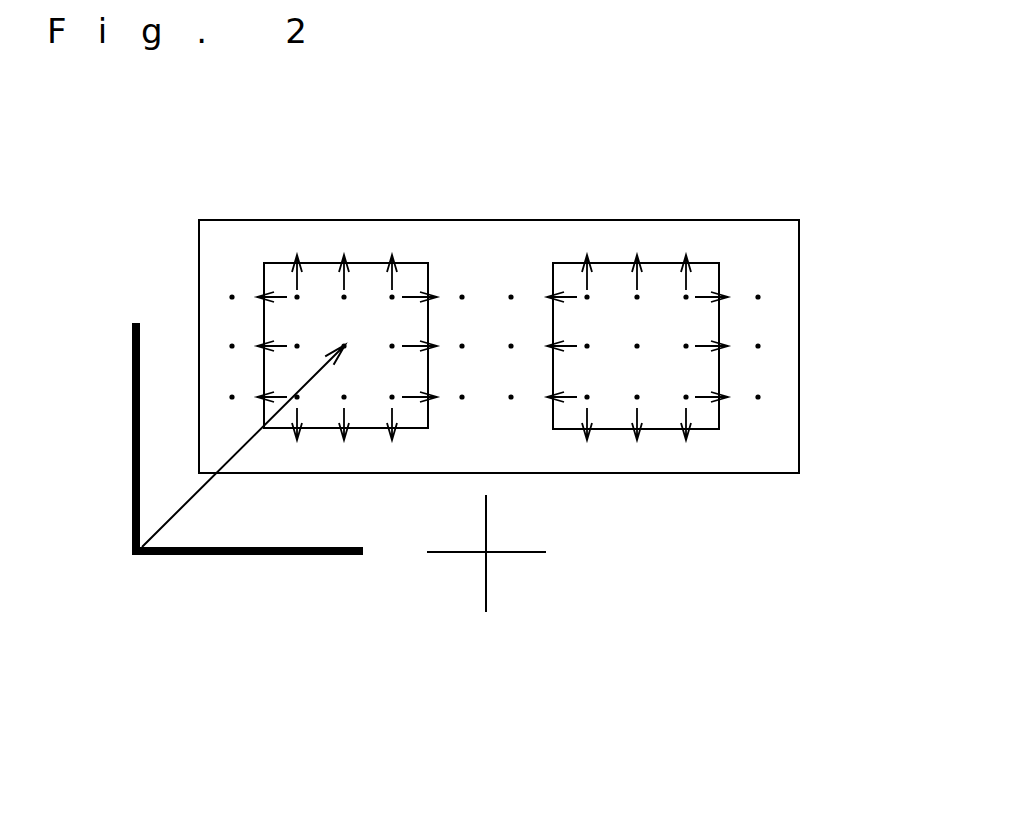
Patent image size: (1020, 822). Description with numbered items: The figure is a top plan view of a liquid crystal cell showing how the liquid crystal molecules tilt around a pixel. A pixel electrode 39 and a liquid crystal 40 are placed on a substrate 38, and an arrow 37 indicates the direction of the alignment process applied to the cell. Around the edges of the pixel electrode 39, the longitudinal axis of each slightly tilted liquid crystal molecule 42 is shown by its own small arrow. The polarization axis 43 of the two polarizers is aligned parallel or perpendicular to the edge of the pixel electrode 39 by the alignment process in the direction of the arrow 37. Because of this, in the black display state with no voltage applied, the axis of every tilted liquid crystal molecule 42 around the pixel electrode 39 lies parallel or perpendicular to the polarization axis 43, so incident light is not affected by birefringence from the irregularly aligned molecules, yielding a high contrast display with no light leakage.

The arrow 37 is at (192, 503).
The substrate 38 is at (778, 247).
The pixel electrode 39 is at (703, 418).
The liquid crystal 40 is at (767, 297).
The liquid crystal molecule 42 is at (587, 432).
The polarization axis 43 is at (546, 552).